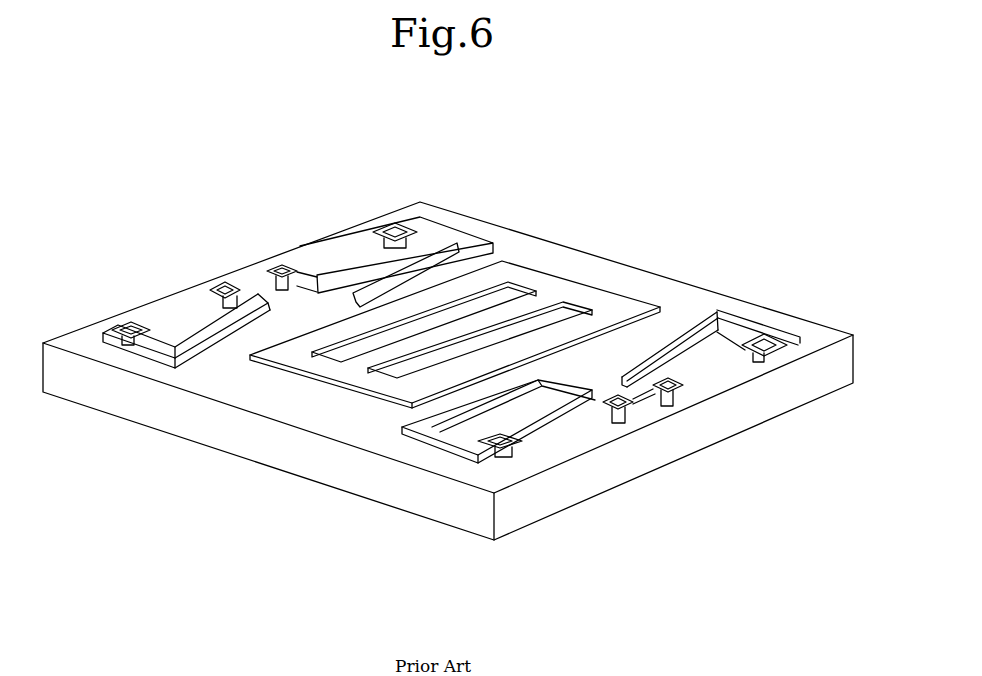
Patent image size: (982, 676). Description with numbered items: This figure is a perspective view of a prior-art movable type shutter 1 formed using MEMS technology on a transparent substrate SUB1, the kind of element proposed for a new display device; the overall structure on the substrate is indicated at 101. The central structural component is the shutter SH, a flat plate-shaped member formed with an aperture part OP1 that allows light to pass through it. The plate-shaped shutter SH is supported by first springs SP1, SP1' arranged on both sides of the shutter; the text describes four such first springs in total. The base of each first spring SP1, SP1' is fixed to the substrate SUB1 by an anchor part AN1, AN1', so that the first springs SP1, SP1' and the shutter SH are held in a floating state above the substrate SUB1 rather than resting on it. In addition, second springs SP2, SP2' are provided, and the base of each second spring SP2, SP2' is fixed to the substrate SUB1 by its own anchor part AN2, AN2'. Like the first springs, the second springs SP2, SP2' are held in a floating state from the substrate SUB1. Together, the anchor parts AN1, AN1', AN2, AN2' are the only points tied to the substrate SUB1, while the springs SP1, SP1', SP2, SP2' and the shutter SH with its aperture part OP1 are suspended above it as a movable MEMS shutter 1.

The movable type shutter 1 is at (534, 258).
The MEMS structure 101 is at (597, 477).
The transparent substrate SUB1 is at (290, 450).
The shutter SH is at (455, 309).
The aperture part OP1 is at (388, 377).
The first spring SP1 is at (758, 291).
The second spring SP2 is at (718, 388).
The anchor part AN1 is at (805, 381).
The anchor part AN2 is at (561, 430).
The first spring SP1' is at (434, 228).
The second spring SP2' is at (334, 282).
The anchor part AN1' is at (371, 200).
The anchor part AN2' is at (210, 282).